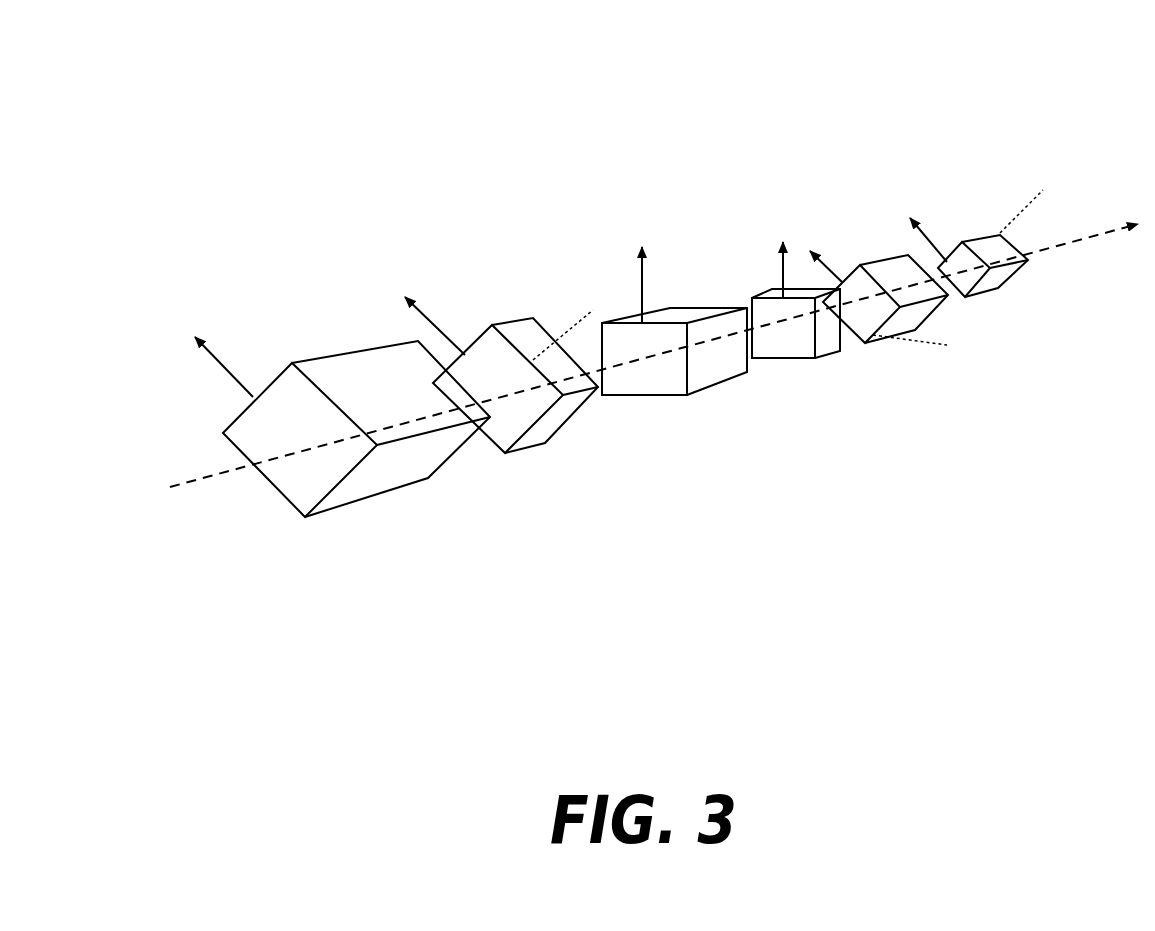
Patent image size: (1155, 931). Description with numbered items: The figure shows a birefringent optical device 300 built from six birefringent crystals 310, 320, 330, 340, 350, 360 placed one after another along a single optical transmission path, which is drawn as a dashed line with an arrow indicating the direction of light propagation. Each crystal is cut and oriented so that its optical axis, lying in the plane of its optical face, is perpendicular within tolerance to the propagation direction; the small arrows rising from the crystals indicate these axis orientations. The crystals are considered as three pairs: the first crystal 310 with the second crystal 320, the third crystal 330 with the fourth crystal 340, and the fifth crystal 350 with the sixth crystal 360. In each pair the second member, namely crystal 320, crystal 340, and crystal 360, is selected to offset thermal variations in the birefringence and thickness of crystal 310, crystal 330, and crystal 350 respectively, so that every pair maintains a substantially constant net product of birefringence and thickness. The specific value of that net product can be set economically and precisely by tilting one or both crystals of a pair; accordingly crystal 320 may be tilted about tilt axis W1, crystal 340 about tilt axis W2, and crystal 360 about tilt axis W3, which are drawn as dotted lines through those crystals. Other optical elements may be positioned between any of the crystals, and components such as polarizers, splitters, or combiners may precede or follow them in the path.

The optical device 300 is at (190, 46).
The birefringent crystal 310 is at (377, 483).
The birefringent crystal 320 is at (527, 437).
The birefringent crystal 330 is at (652, 393).
The birefringent crystal 340 is at (785, 360).
The birefringent crystal 350 is at (890, 272).
The birefringent crystal 360 is at (995, 277).
The tilt axis W1 is at (571, 317).
The tilt axis W2 is at (925, 359).
The tilt axis W3 is at (1035, 198).